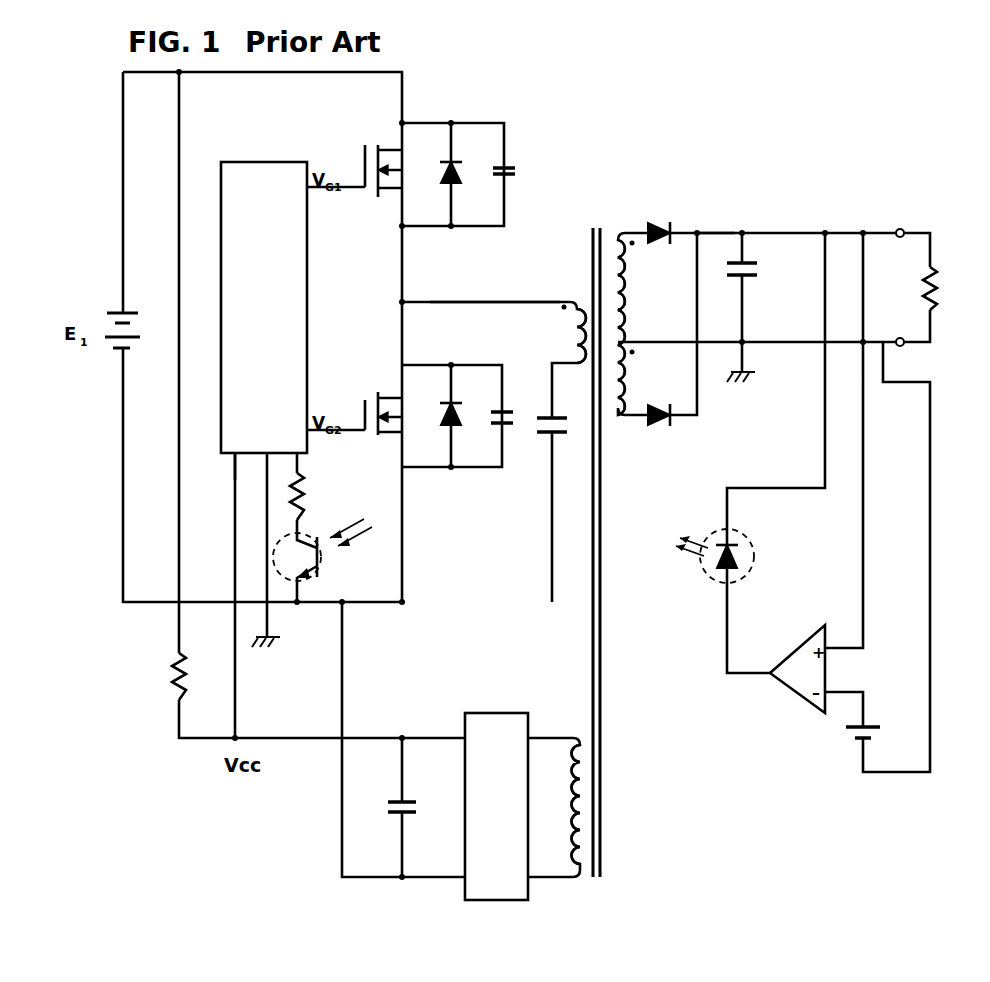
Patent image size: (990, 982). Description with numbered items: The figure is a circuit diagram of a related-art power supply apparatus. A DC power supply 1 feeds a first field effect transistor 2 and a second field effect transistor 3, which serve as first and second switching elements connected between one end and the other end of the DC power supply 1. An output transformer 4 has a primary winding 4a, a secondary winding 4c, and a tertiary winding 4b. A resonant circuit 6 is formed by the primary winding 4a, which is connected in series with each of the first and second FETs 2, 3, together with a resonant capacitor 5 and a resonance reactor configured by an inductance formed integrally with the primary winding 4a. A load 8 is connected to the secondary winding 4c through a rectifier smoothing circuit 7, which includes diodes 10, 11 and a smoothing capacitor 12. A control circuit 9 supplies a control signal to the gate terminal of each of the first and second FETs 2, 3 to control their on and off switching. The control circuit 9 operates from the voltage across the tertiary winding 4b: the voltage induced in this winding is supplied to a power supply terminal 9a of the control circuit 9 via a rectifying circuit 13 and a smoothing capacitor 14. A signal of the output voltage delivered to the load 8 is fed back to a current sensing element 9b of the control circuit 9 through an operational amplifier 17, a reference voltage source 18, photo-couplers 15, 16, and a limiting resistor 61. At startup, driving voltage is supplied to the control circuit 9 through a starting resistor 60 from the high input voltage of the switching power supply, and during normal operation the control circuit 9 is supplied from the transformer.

The DC power supply 1 is at (138, 330).
The first field effect transistor 2 is at (365, 144).
The second field effect transistor 3 is at (372, 394).
The output transformer 4 is at (598, 228).
The primary winding 4a is at (575, 300).
The tertiary winding 4b is at (562, 880).
The secondary winding 4c is at (628, 233).
The resonant capacitor 5 is at (538, 436).
The resonant circuit 6 is at (488, 302).
The rectifier smoothing circuit 7 is at (714, 233).
The load 8 is at (920, 292).
The control circuit 9 is at (268, 162).
The power supply terminal 9a is at (235, 458).
The current sensing element 9b is at (299, 470).
The diode 10 is at (662, 243).
The diode 11 is at (660, 425).
The smoothing capacitor 12 is at (758, 268).
The rectifying circuit 13 is at (498, 713).
The smoothing capacitor 14 is at (392, 808).
The photo-coupler 15 is at (753, 556).
The photo-coupler 16 is at (322, 558).
The operational amplifier 17 is at (792, 692).
The reference voltage source 18 is at (848, 740).
The starting resistor 60 is at (170, 680).
The limiting resistor 61 is at (300, 496).